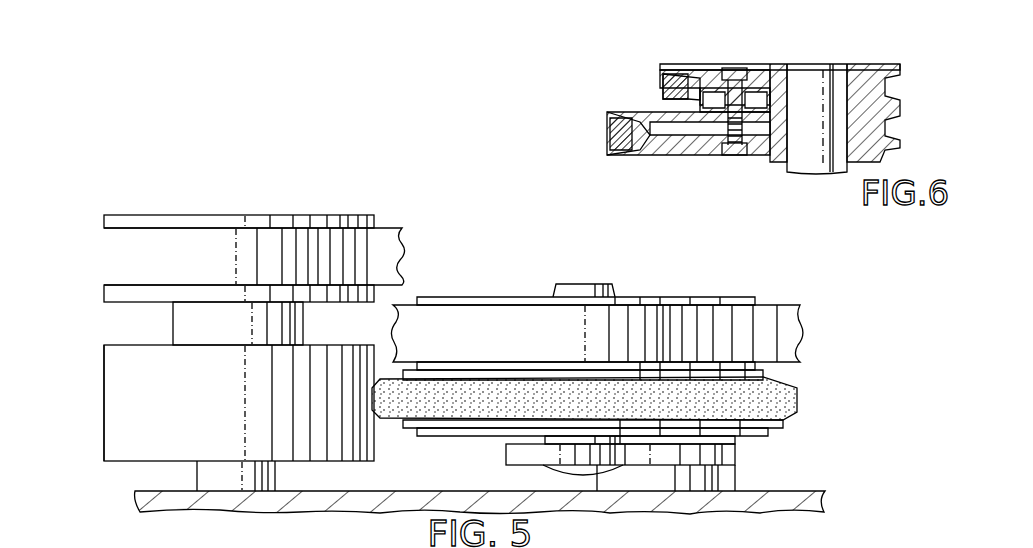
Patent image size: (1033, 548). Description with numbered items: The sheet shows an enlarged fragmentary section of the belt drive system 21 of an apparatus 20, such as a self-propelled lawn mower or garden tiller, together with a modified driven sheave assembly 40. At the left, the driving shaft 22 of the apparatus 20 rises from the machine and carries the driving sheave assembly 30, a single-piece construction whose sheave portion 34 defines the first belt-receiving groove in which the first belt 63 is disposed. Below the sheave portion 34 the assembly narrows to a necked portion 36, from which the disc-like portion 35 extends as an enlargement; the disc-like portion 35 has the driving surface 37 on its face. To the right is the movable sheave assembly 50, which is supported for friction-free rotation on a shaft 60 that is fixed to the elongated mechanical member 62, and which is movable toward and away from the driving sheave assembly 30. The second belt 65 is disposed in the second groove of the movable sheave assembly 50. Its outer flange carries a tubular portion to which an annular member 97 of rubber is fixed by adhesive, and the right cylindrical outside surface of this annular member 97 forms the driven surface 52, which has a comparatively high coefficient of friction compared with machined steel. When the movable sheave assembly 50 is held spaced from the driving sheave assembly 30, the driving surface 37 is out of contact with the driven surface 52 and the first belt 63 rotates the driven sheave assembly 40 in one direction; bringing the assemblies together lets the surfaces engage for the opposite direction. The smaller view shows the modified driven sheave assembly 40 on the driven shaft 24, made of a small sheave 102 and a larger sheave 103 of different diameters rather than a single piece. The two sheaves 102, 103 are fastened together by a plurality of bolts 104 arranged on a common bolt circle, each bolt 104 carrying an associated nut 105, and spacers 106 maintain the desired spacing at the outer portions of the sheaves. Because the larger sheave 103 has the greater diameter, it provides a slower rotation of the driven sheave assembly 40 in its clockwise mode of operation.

In FIG. 5, the belt drive system 21 is at (217, 173).
In FIG. 5, the sheave portion 34 is at (288, 217).
In FIG. 5, the first belt 63 is at (382, 250).
In FIG. 5, the driving sheave assembly 30 is at (172, 313).
In FIG. 5, the necked portion 36 is at (172, 330).
In FIG. 5, the driving surface 37 is at (104, 378).
In FIG. 5, the disc-like portion 35 is at (118, 412).
In FIG. 5, the driving shaft 22 is at (197, 474).
In FIG. 5, the apparatus 20 is at (800, 478).
In FIG. 5, the movable sheave assembly 50 is at (812, 315).
In FIG. 5, the second belt 65 is at (787, 330).
In FIG. 5, the shaft 60 is at (583, 290).
In FIG. 5, the driven surface 52 is at (800, 398).
In FIG. 5, the annular member 97 is at (468, 405).
In FIG. 5, the elongated mechanical member 62 is at (515, 453).
In FIG. 6, the driven sheave assembly 40 is at (826, 50).
In FIG. 6, the small sheave 102 is at (688, 65).
In FIG. 6, the larger sheave 103 is at (626, 115).
In FIG. 6, the bolt 104 is at (735, 66).
In FIG. 6, the nut 105 is at (736, 157).
In FIG. 6, the spacer 106 is at (716, 112).
In FIG. 6, the driven shaft 24 is at (818, 160).